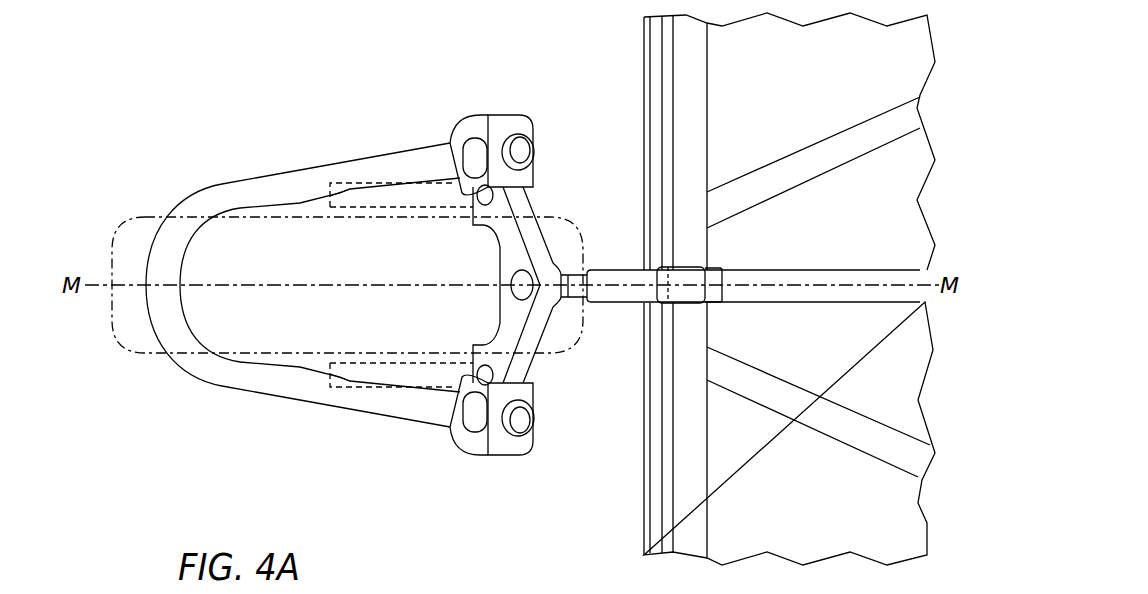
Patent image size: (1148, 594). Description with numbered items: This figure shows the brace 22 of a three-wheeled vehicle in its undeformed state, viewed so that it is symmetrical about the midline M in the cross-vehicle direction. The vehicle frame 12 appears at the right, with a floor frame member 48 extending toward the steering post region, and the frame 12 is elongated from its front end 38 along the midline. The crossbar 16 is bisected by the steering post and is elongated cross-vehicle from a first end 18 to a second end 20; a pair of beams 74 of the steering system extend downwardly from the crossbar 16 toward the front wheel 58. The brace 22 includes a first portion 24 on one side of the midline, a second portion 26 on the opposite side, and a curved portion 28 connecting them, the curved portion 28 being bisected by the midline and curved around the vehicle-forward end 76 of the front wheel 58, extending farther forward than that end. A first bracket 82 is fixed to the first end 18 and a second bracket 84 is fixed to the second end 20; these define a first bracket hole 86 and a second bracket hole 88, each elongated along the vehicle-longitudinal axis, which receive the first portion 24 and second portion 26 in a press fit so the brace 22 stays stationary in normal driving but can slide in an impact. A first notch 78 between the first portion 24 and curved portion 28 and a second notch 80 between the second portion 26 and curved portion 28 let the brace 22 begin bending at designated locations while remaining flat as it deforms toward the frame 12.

The vehicle frame 12 is at (708, 113).
The crossbar 16 is at (535, 208).
The first end 18 is at (527, 125).
The second end 20 is at (525, 446).
The brace 22 is at (335, 141).
The first portion 24 is at (335, 141).
The second portion 26 is at (413, 405).
The curved portion 28 is at (203, 190).
The front end 38 is at (696, 360).
The floor frame member 48 is at (602, 270).
The front wheel 58 is at (302, 210).
The beams 74 is at (343, 167).
The vehicle-forward end 76 is at (110, 252).
The first notch 78 is at (349, 193).
The second notch 80 is at (349, 378).
The first bracket 82 is at (495, 130).
The second bracket 84 is at (495, 440).
The first bracket hole 86 is at (534, 146).
The second bracket hole 88 is at (563, 397).